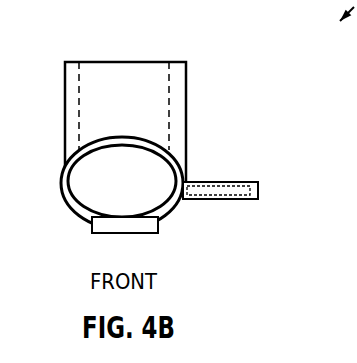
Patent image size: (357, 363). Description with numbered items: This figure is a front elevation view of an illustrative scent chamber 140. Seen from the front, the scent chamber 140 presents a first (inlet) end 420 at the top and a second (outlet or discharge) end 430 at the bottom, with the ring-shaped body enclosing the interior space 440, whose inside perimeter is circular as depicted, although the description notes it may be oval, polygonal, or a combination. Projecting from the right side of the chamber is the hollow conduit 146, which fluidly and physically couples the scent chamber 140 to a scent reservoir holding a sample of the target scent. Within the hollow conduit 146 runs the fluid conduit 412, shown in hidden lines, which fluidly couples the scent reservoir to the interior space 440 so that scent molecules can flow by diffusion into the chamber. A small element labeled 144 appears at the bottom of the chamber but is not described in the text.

The scent chamber 140 is at (191, 30).
The first (inlet) end 420 is at (113, 62).
The second (outlet or discharge) end 430 is at (61, 186).
The interior space 440 is at (129, 167).
The bottom connector 144 is at (157, 232).
The hollow conduit 146 is at (259, 190).
The fluid conduit 412 is at (222, 192).